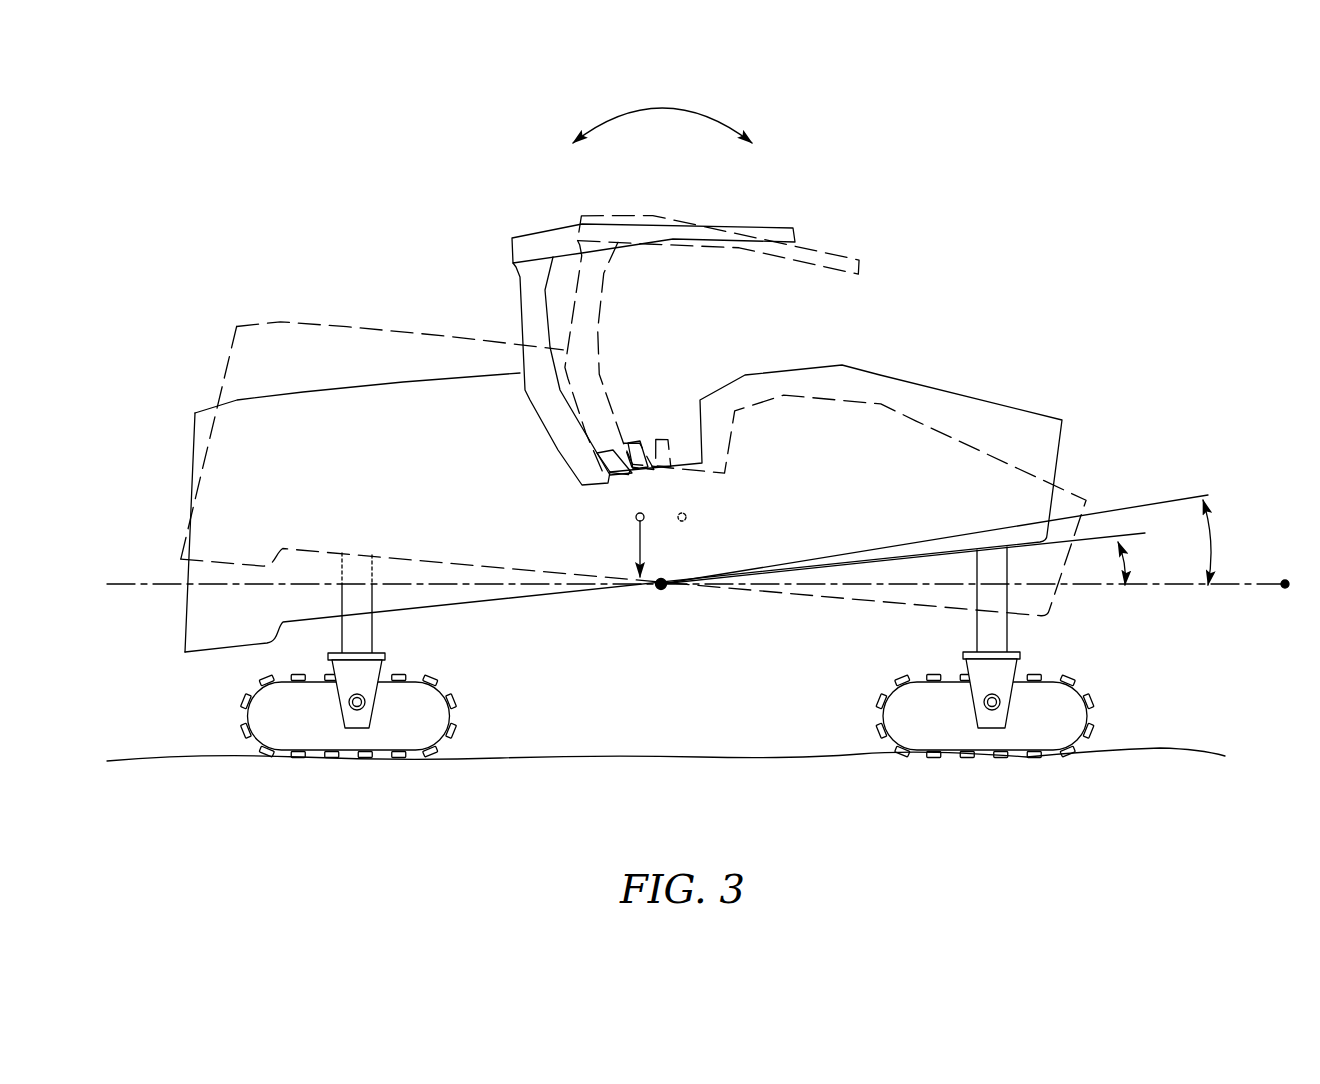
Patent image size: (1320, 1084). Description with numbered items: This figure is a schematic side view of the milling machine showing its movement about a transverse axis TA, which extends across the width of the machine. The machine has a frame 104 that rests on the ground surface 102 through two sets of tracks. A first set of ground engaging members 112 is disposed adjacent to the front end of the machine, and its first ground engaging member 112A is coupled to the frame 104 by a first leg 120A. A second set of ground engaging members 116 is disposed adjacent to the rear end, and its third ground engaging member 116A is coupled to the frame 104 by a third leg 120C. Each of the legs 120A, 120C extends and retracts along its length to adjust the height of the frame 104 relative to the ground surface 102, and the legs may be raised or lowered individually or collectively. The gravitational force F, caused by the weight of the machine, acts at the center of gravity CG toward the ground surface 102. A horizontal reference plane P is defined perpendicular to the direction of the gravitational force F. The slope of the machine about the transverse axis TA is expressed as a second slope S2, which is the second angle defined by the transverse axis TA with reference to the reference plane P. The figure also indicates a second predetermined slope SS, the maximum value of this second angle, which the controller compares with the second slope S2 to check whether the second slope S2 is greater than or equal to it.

The ground surface 102 is at (1203, 750).
The frame 104 is at (483, 482).
The first set of ground engaging members 112 is at (1028, 758).
The first ground engaging member 112A is at (1090, 722).
The second set of ground engaging members 116 is at (393, 758).
The third ground engaging member 116A is at (453, 722).
The first leg 120A is at (1008, 633).
The third leg 120C is at (373, 633).
The transverse axis TA is at (661, 590).
The center of gravity CG is at (640, 506).
The gravitational force F is at (640, 540).
The second predetermined slope SS is at (1215, 540).
The second slope S2 is at (1130, 560).
The reference plane P is at (1285, 582).